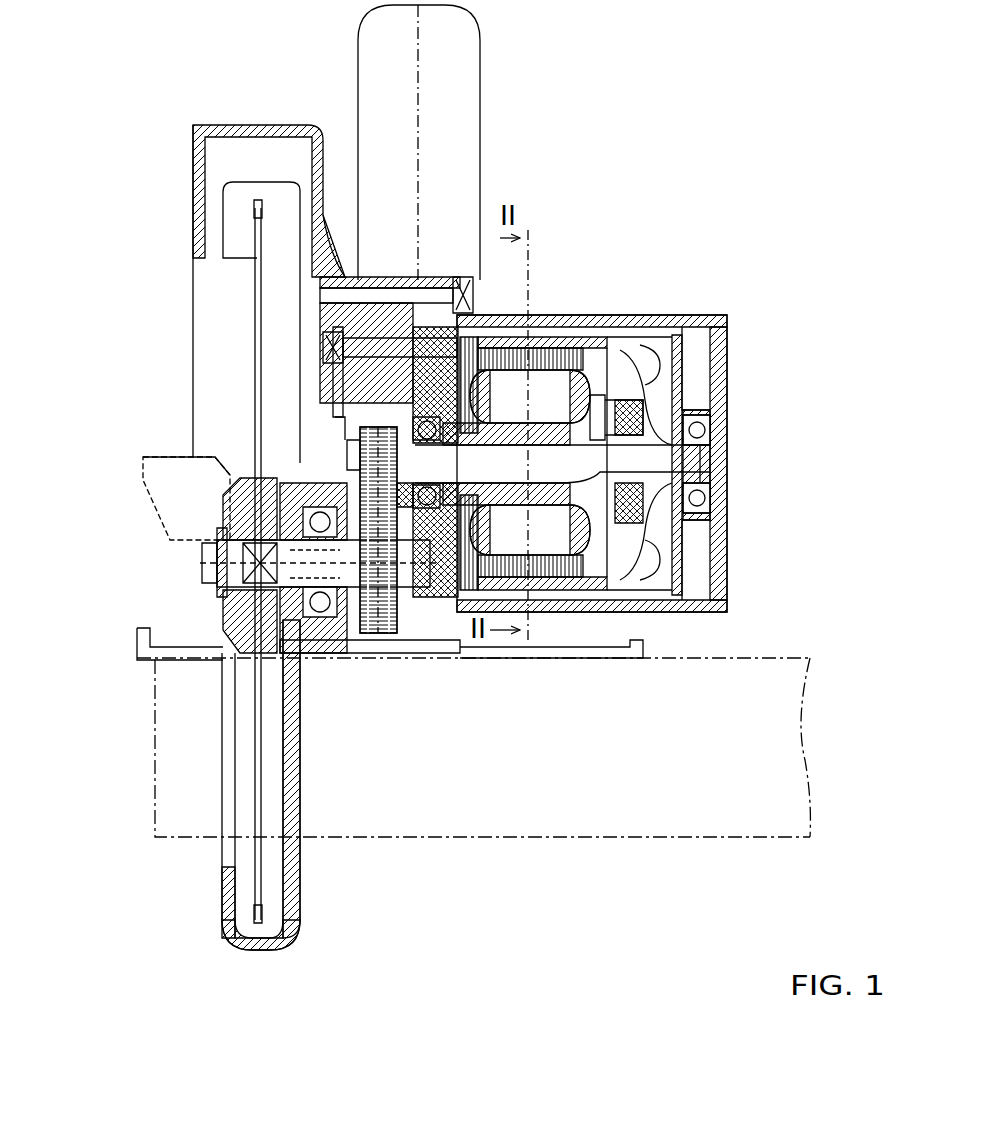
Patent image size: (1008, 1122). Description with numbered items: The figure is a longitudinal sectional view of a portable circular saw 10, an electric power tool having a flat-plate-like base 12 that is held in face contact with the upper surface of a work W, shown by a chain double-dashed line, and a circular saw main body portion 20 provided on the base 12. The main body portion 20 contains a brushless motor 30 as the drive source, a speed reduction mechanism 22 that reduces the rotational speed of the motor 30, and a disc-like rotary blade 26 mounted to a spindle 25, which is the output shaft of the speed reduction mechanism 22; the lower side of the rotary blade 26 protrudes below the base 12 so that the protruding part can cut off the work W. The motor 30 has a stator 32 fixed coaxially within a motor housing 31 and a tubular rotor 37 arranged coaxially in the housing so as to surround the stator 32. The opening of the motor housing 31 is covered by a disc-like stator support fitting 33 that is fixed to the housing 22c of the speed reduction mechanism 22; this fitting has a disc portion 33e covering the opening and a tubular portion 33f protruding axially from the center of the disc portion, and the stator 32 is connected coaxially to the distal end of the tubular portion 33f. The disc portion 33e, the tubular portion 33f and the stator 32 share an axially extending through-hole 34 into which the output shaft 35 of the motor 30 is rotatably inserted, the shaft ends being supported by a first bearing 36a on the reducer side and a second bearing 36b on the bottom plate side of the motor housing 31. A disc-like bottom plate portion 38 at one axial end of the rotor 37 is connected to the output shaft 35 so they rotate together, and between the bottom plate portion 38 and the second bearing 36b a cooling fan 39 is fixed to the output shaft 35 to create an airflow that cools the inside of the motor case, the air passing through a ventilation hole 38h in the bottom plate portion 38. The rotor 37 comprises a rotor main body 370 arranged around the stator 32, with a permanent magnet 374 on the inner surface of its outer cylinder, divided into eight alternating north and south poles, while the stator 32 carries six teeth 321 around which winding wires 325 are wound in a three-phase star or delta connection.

The portable circular saw 10 is at (100, 150).
The circular saw main body portion 20 is at (180, 123).
The speed reduction mechanism 22 is at (377, 383).
The housing of the speed reduction mechanism 22c is at (320, 292).
The stator support fitting 33 is at (428, 363).
The tubular portion 33f is at (497, 335).
The disc portion 33e is at (440, 612).
The rotary blade 26 is at (256, 335).
The first bearing 36a is at (418, 412).
The second bearing 36b is at (712, 432).
The spindle 25 is at (360, 633).
The stator 32 is at (462, 610).
The base 12 is at (650, 645).
The work W is at (765, 733).
The brushless motor 30 is at (722, 314).
The motor housing 31 is at (718, 330).
The cooling fan 39 is at (686, 362).
The through-hole 34 is at (645, 472).
The output shaft 35 is at (655, 455).
The teeth 321 is at (543, 535).
The rotor 37 is at (560, 338).
The winding wires 325 is at (592, 592).
The rotor main body 370 is at (545, 347).
The permanent magnet 374 is at (608, 336).
The bottom plate portion 38 is at (632, 345).
The ventilation hole 38h is at (660, 335).